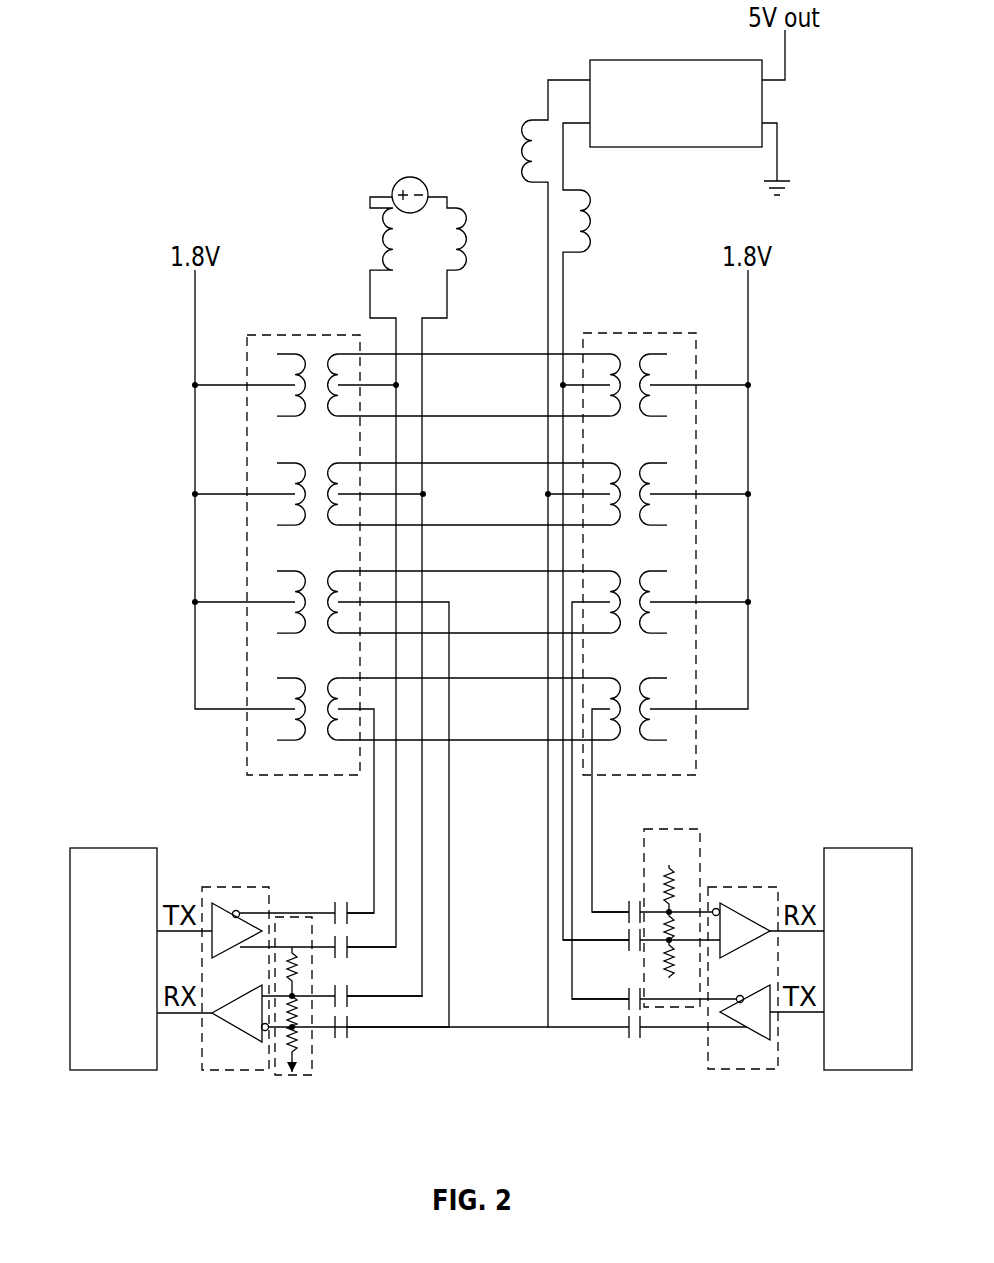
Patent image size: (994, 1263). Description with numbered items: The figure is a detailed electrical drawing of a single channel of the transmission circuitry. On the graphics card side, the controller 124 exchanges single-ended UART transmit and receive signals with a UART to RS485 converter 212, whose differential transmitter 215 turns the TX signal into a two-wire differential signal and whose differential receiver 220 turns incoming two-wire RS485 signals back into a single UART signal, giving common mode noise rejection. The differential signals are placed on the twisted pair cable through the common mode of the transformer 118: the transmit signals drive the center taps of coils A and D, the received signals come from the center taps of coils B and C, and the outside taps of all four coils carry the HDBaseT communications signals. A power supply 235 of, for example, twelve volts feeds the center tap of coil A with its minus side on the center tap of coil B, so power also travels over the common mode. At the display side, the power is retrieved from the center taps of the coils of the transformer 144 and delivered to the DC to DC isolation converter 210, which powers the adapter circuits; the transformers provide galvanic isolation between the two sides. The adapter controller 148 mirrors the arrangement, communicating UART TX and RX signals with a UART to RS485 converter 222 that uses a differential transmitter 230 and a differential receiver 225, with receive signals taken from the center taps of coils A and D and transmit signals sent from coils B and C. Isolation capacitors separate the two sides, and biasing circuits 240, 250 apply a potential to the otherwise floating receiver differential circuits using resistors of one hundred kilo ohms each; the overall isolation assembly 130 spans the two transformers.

The DC to DC isolation converter 210 is at (622, 60).
The power supply 235 is at (418, 178).
The transformer 130 is at (480, 317).
The transformer 118 is at (297, 335).
The transformer 144 is at (652, 333).
The controller 124 is at (97, 848).
The adapter controller 148 is at (851, 848).
The UART to RS485 converter 212 is at (228, 1072).
The differential transmitter 215 is at (216, 903).
The differential receiver 220 is at (240, 1030).
The biasing circuit 240 is at (312, 1058).
The UART to RS485 converter 222 is at (725, 1072).
The differential receiver 225 is at (728, 903).
The differential transmitter 230 is at (757, 1040).
The biasing circuit 250 is at (665, 829).